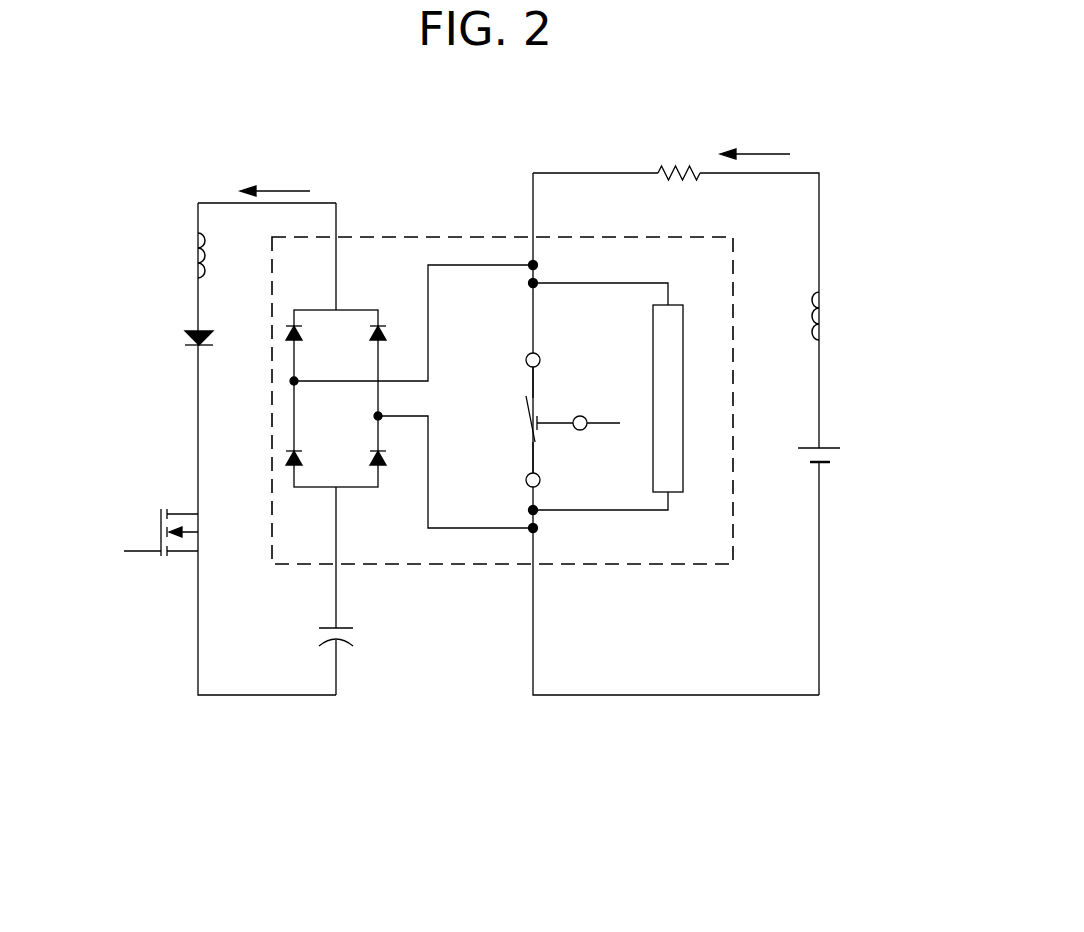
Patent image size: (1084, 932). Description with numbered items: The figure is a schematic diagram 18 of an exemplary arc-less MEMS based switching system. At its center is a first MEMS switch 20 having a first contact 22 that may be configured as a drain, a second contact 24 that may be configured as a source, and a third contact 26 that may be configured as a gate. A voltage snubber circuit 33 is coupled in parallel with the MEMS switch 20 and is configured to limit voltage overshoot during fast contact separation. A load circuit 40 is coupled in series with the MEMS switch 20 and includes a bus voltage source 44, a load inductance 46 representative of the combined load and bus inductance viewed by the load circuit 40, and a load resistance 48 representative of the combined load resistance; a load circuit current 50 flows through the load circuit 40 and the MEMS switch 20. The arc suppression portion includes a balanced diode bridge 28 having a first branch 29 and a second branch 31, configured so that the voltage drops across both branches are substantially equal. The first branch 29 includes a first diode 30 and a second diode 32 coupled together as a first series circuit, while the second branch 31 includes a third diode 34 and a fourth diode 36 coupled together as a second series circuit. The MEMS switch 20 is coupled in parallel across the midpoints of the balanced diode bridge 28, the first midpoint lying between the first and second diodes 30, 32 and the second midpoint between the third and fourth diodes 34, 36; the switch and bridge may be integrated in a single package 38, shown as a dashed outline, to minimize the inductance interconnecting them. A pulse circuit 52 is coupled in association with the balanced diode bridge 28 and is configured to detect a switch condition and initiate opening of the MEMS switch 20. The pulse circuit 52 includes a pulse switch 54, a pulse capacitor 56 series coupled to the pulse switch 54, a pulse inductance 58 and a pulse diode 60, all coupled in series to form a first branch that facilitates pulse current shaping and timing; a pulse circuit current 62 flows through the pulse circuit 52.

The schematic diagram 18 is at (788, 92).
The first MEMS switch 20 is at (547, 403).
The first contact 22 is at (526, 358).
The second contact 24 is at (526, 481).
The third contact 26 is at (582, 432).
The balanced diode bridge 28 is at (324, 365).
The first branch 29 is at (276, 410).
The first diode D1 30 is at (300, 342).
The second branch 31 is at (400, 400).
The second diode D2 32 is at (304, 450).
The voltage snubber circuit 33 is at (685, 360).
The third diode D3 34 is at (375, 343).
The fourth diode D4 36 is at (375, 450).
The single package 38 is at (465, 237).
The load circuit 40 is at (748, 718).
The voltage source V_BUS 44 is at (800, 447).
The load inductance L_LOAD 46 is at (812, 340).
The load resistance R_LOAD 48 is at (670, 172).
The load circuit current I_LOAD 50 is at (745, 152).
The pulse circuit 52 is at (283, 708).
The pulse switch 54 is at (180, 556).
The pulse capacitor C_PULSE 56 is at (345, 648).
The pulse inductance L_PULSE 58 is at (196, 236).
The first diode D_p 60 is at (199, 346).
The pulse circuit current I_PULSE 62 is at (263, 191).